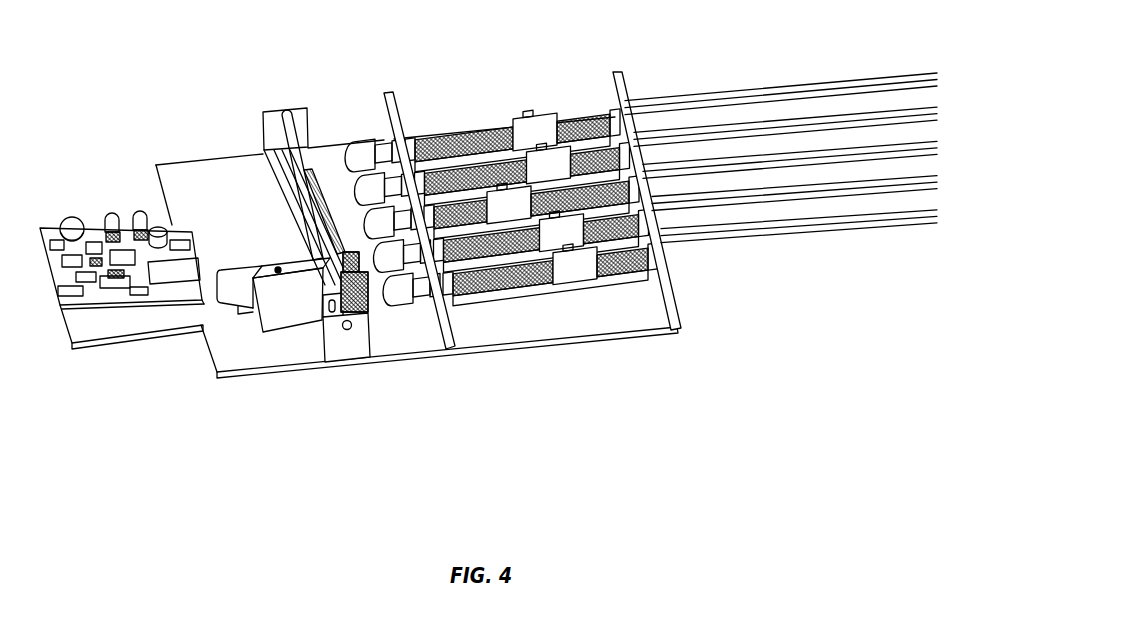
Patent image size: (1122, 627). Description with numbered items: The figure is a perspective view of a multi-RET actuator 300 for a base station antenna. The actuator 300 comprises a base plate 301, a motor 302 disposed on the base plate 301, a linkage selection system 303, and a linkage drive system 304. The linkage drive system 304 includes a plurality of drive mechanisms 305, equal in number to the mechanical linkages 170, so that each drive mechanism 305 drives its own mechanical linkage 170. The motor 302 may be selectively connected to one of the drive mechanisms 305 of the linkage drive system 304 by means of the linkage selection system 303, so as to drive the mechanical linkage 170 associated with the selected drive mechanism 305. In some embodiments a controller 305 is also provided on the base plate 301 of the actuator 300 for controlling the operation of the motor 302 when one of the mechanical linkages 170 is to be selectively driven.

The multi-RET actuator 300 is at (108, 70).
The base plate 301 is at (190, 178).
The motor 302 is at (253, 270).
The linkage selection system 303 is at (272, 127).
The linkage drive system 304 is at (387, 125).
The drive mechanism 305 is at (482, 147).
The mechanical linkage 170 is at (683, 105).